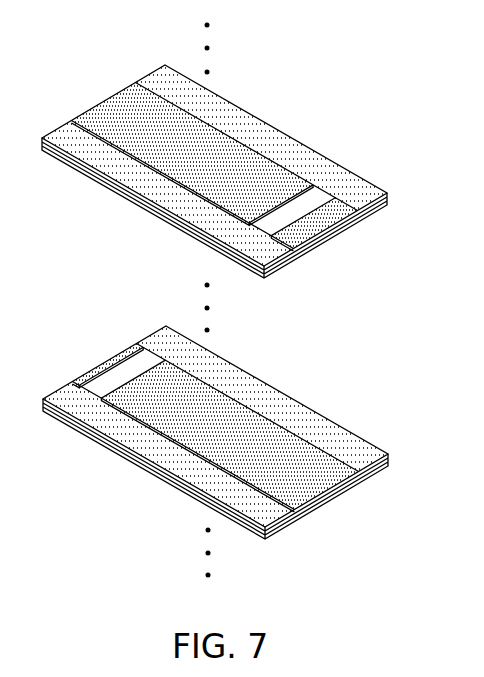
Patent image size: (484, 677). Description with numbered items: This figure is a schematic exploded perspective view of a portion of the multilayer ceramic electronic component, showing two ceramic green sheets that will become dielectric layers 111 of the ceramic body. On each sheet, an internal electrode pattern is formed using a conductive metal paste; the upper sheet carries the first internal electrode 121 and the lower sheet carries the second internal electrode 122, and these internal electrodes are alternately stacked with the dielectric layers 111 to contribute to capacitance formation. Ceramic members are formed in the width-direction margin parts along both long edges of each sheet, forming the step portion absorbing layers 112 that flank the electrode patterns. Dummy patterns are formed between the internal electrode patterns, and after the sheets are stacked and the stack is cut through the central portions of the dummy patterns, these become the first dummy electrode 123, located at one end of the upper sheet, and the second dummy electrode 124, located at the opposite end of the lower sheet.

The dielectric layer 111 is at (367, 216).
The step portion absorbing layer 112 is at (265, 140).
The first internal electrode 121 is at (116, 107).
The second internal electrode 122 is at (300, 447).
The first dummy electrode 123 is at (333, 207).
The second dummy electrode 124 is at (115, 363).